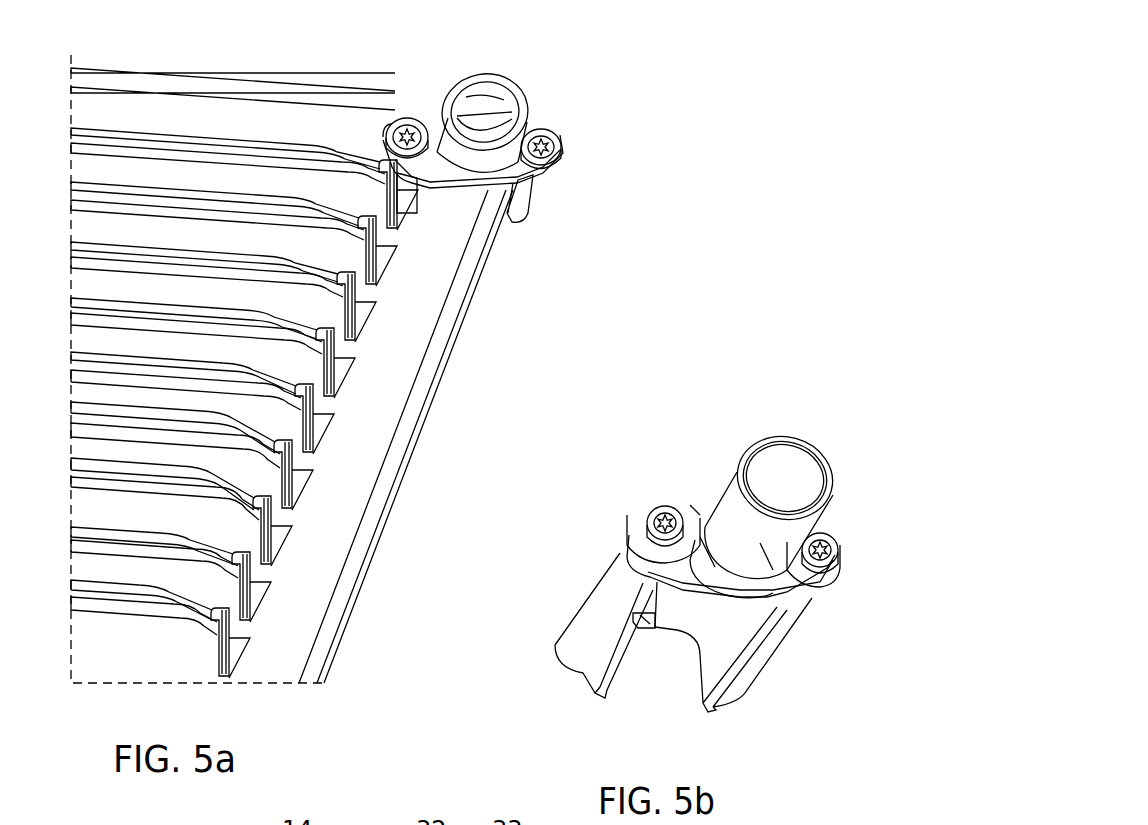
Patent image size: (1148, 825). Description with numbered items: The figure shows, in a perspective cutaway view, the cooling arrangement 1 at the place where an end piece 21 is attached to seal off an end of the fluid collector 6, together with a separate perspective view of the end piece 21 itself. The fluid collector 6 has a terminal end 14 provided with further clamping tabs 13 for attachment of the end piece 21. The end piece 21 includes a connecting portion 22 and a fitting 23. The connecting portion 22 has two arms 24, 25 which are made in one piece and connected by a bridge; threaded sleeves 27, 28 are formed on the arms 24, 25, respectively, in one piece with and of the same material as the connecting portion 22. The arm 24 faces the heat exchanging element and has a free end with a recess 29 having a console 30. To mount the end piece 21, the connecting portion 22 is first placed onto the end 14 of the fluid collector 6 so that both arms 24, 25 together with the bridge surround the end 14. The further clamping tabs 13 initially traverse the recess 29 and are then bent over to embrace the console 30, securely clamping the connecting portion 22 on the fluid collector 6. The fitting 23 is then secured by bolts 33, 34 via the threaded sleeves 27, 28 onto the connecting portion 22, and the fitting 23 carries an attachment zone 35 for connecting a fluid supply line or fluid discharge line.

In FIG. 5a, the cooling arrangement 1 is at (283, 77).
In FIG. 5a, the fluid collector 6 is at (348, 541).
In FIG. 5a, the further clamping tabs 13 is at (424, 195).
In FIG. 5a, the terminal end 14 is at (558, 181).
In FIG. 5a, the end piece 21 is at (512, 76).
In FIG. 5b, the end piece 21 is at (851, 458).
In FIG. 5b, the connecting portion 22 is at (763, 690).
In FIG. 5b, the fitting 23 is at (846, 507).
In FIG. 5b, the arm 24 is at (601, 685).
In FIG. 5b, the arm 25 is at (716, 713).
In FIG. 5b, the threaded sleeve 27 is at (604, 592).
In FIG. 5b, the threaded sleeve 28 is at (774, 637).
In FIG. 5b, the recess 29 is at (651, 610).
In FIG. 5b, the console 30 is at (635, 609).
In FIG. 5b, the bolt 33 is at (662, 519).
In FIG. 5b, the bolt 34 is at (837, 553).
In FIG. 5b, the attachment zone 35 is at (775, 464).